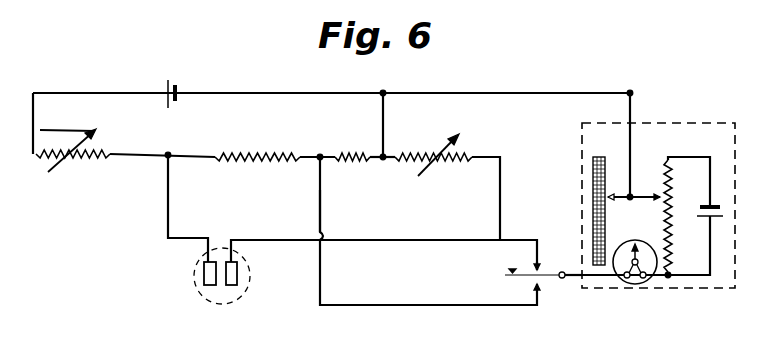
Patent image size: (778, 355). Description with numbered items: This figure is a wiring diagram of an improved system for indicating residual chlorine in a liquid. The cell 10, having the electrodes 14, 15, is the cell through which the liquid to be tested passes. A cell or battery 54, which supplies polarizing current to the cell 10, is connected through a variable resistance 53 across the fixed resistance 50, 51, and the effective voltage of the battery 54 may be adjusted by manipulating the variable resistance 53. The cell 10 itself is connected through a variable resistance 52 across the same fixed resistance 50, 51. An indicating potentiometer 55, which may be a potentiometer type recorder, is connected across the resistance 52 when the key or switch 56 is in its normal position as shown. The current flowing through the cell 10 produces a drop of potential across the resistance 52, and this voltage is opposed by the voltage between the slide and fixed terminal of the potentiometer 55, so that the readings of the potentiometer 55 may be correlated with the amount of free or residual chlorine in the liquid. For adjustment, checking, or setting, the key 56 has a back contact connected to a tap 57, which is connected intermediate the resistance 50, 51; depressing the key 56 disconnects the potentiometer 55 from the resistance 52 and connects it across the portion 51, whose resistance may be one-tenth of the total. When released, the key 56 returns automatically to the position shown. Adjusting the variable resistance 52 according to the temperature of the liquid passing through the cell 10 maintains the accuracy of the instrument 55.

The cell 10 is at (193, 270).
The electrode 14 is at (200, 283).
The electrode 15 is at (234, 281).
The fixed resistance 50 is at (249, 165).
The fixed resistance portion 51 is at (352, 169).
The variable resistance 52 is at (428, 170).
The variable resistance 53 is at (88, 160).
The battery 54 is at (172, 80).
The indicating potentiometer 55 is at (693, 113).
The key or switch 56 is at (547, 277).
The tap 57 is at (322, 216).